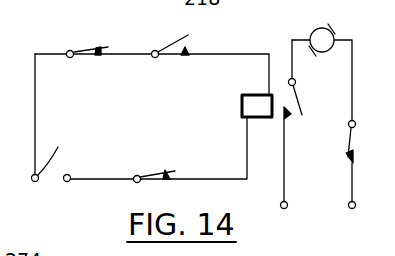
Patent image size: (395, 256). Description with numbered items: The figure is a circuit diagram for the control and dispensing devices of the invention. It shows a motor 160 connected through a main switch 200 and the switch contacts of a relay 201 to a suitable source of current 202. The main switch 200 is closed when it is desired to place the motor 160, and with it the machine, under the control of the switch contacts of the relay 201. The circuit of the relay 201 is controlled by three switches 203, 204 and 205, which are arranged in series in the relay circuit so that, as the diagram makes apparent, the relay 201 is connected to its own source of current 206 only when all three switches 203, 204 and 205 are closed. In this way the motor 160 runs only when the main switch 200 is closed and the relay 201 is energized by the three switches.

The motor 160 is at (313, 30).
The main switch 200 is at (349, 137).
The relay 201 is at (256, 118).
The source of current 202 is at (350, 207).
The switch 203 is at (85, 47).
The switch 204 is at (167, 46).
The switch 205 is at (153, 171).
The source of current 206 is at (63, 172).